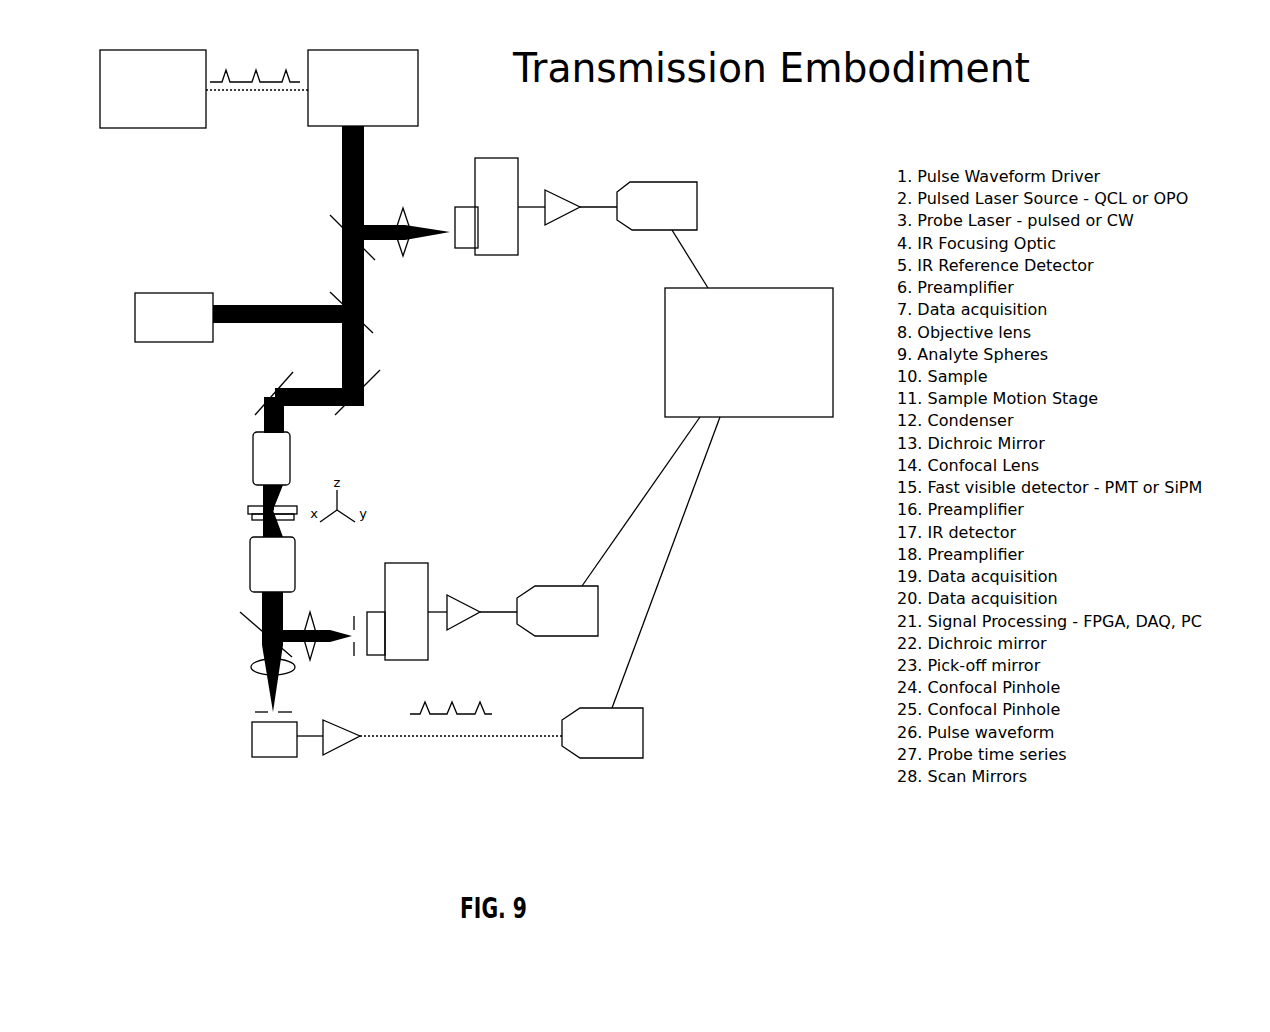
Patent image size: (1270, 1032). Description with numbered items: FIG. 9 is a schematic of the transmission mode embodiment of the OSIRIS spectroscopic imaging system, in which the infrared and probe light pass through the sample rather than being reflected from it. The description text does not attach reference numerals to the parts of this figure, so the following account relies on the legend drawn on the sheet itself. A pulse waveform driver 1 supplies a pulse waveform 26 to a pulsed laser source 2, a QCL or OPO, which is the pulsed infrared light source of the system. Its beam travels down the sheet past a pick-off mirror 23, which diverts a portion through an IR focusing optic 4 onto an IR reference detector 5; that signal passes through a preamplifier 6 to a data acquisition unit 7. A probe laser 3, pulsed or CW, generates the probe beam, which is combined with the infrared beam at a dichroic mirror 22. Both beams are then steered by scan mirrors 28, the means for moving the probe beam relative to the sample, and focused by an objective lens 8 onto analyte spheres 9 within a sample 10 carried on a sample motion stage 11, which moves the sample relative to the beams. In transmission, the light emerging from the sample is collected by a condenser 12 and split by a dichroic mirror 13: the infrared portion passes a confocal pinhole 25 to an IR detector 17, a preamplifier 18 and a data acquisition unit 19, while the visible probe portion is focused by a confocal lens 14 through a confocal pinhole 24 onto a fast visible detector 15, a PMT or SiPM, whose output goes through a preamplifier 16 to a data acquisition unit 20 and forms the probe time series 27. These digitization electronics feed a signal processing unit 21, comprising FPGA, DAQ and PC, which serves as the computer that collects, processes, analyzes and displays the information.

The Pulse Waveform Driver 1 is at (310, 612).
The Pulsed Laser Source - QCL or OPO 2 is at (363, 88).
The Probe Laser - pulsed or CW 3 is at (174, 317).
The IR Focusing Optic 4 is at (403, 214).
The IR Reference Detector 5 is at (486, 206).
The Preamplifier 6 is at (567, 207).
The Data acquisition 7 is at (657, 189).
The Objective lens 8 is at (271, 458).
The Analyte Spheres 9 is at (262, 508).
The Sample 10 is at (248, 512).
The Sample Motion Stage 11 is at (256, 524).
The Condenser 12 is at (272, 564).
The Dichroic Mirror 13 is at (253, 626).
The Confocal Lens 14 is at (251, 667).
The Fast visible detector - PMT or SiPM 15 is at (274, 739).
The Preamplifier 16 is at (429, 737).
The IR detector 17 is at (406, 611).
The Preamplifier 18 is at (472, 612).
The Data acquisition 19 is at (557, 596).
The Data acquisition 20 is at (602, 717).
The Signal Processing - FPGA, DAQ, PC 21 is at (707, 469).
The Dichroic mirror 22 is at (366, 313).
The Pick-off mirror 23 is at (343, 226).
The Confocal Pinhole 24 is at (259, 710).
The Confocal Pinhole 25 is at (362, 625).
The Pulse waveform 26 is at (257, 60).
The Probe time series 27 is at (450, 698).
The Scan Mirrors 28 is at (320, 394).